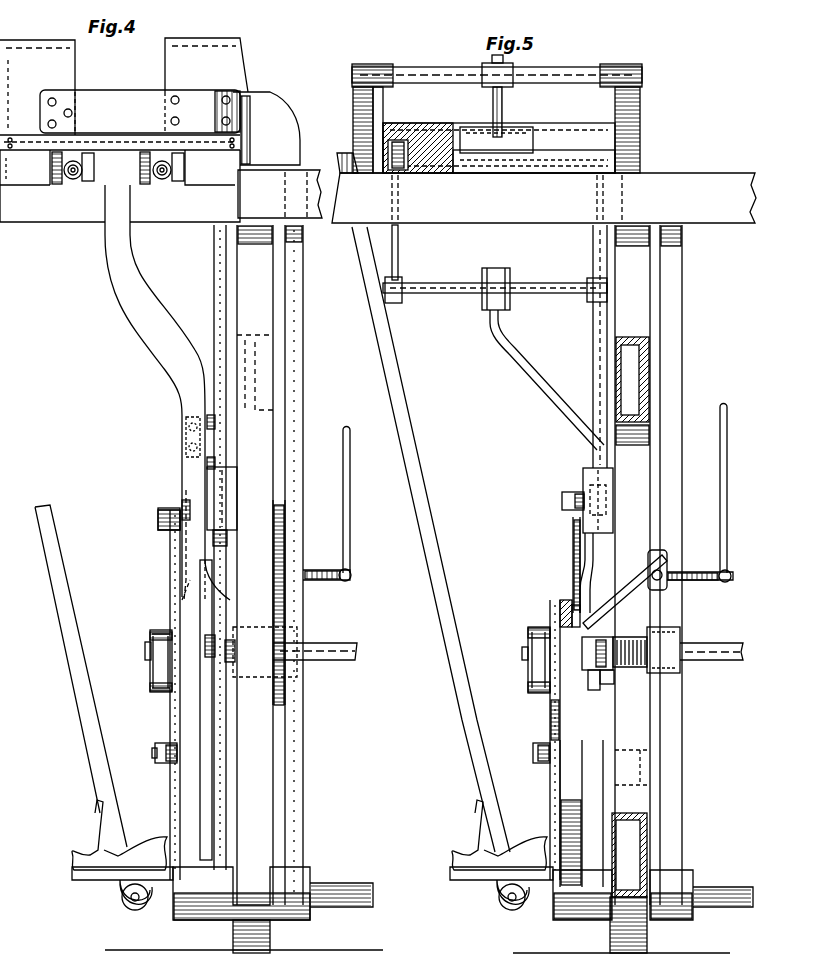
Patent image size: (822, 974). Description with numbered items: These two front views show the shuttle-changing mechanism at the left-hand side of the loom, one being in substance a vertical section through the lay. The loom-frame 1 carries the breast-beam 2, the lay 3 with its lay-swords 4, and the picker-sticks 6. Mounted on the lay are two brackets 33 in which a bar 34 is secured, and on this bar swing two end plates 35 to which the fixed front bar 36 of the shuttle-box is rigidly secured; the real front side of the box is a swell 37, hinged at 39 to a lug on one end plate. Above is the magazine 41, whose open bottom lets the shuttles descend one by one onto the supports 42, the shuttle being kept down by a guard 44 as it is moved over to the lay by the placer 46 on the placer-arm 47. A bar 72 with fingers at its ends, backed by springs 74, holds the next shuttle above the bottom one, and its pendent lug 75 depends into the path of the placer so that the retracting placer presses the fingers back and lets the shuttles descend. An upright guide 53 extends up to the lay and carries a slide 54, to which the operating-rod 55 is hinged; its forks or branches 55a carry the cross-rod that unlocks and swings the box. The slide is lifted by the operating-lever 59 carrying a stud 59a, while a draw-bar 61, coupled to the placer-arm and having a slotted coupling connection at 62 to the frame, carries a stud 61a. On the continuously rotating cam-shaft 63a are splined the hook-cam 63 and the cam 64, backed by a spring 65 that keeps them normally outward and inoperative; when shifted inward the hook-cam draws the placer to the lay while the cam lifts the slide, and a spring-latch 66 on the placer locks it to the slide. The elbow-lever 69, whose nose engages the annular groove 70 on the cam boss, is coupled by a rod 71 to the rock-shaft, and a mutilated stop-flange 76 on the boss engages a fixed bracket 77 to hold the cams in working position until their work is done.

In FIG. 4, the loom-frame 1 is at (270, 565).
In FIG. 5, the loom-frame 1 is at (598, 500).
In FIG. 4, the breast-beam 2 is at (277, 155).
In FIG. 5, the lay 3 is at (544, 198).
In FIG. 5, the lay-swords 4 is at (676, 378).
In FIG. 4, the picker-sticks 6 is at (70, 677).
In FIG. 5, the picker-sticks 6 is at (452, 660).
In FIG. 5, the brackets 33 is at (355, 119).
In FIG. 5, the bar 34 is at (445, 70).
In FIG. 5, the end plates 35 is at (385, 112).
In FIG. 5, the front bar 36 is at (537, 165).
In FIG. 5, the swell 37 is at (420, 174).
In FIG. 5, the hinge 39 is at (378, 178).
In FIG. 4, the magazine 41 is at (124, 74).
In FIG. 4, the supports 42 is at (60, 185).
In FIG. 5, the guard 44 is at (505, 140).
In FIG. 4, the placer 46 is at (88, 181).
In FIG. 4, the placer-arm 47 is at (152, 350).
In FIG. 4, the upright guide 53 is at (214, 312).
In FIG. 4, the slide 54 is at (230, 520).
In FIG. 5, the operating-rod 55 is at (535, 372).
In FIG. 5, the forks or branches 55a is at (400, 260).
In FIG. 5, the operating-lever 59 is at (573, 542).
In FIG. 5, the stud 59a is at (575, 590).
In FIG. 4, the draw-bar 61 is at (170, 582).
In FIG. 5, the draw-bar 61 is at (550, 728).
In FIG. 4, the stud 61a is at (165, 690).
In FIG. 4, the slotted coupling connection 62 is at (156, 758).
In FIG. 4, the hook-cam 63 is at (148, 680).
In FIG. 5, the hook-cam 63 is at (528, 684).
In FIG. 4, the cam-shaft 63a is at (330, 650).
In FIG. 5, the cam 64 is at (558, 598).
In FIG. 5, the spring 65 is at (650, 632).
In FIG. 4, the spring-latch 66 is at (185, 425).
In FIG. 5, the elbow-lever 69 is at (625, 600).
In FIG. 5, the annular groove 70 is at (615, 645).
In FIG. 5, the rod 71 is at (728, 478).
In FIG. 4, the bar 72 is at (113, 135).
In FIG. 4, the springs 74 is at (38, 146).
In FIG. 4, the pendent lug 75 is at (158, 180).
In FIG. 5, the mutilated stop-flange 76 is at (612, 690).
In FIG. 5, the fixed bracket 77 is at (618, 677).